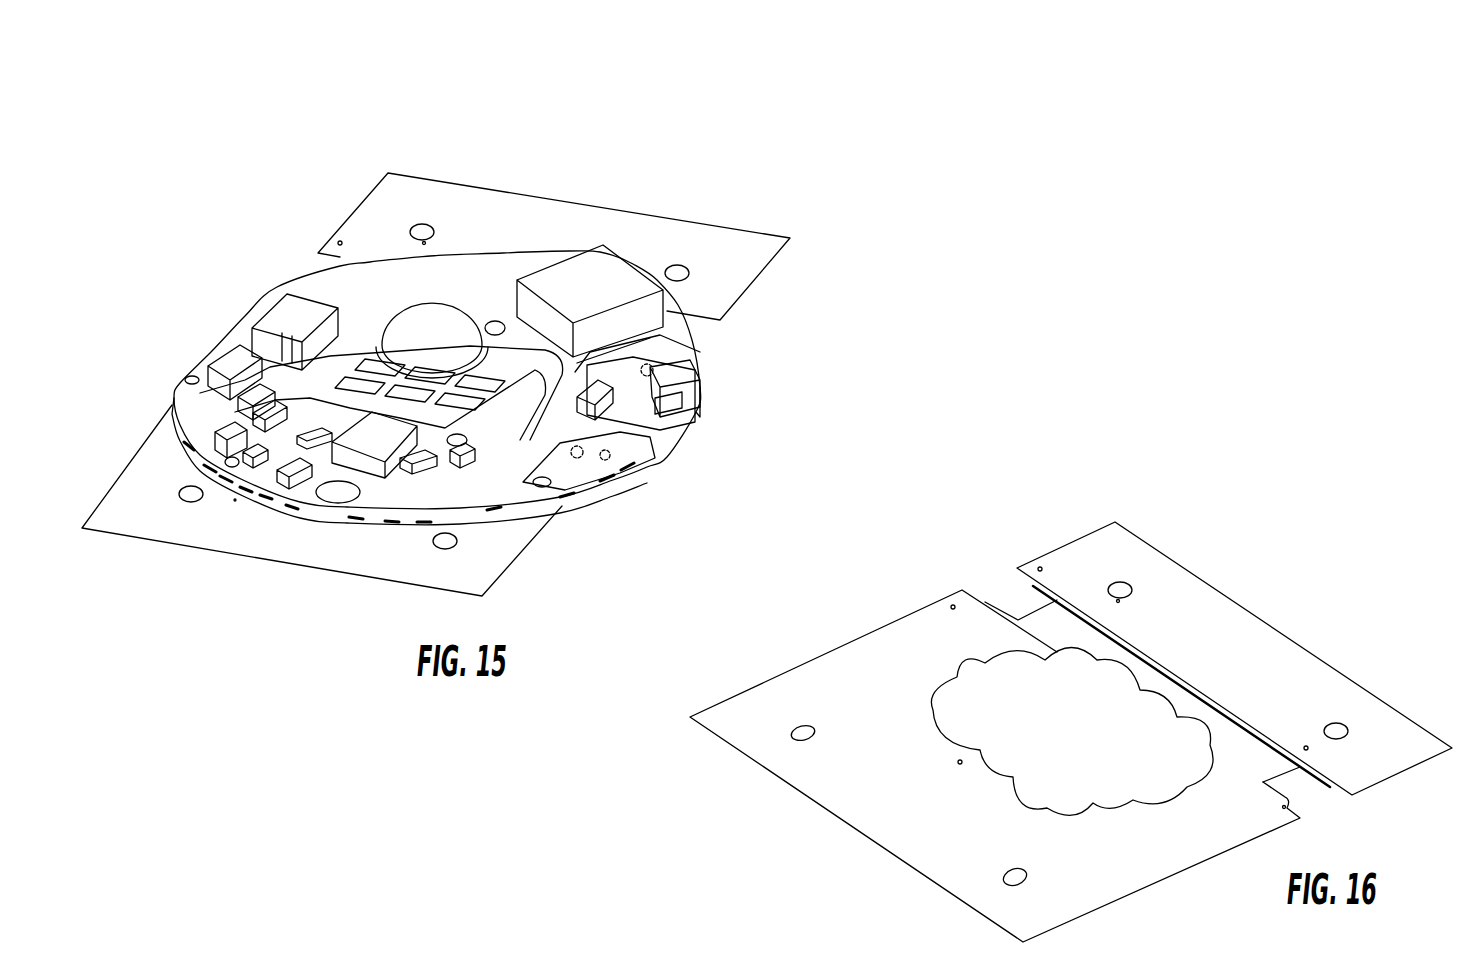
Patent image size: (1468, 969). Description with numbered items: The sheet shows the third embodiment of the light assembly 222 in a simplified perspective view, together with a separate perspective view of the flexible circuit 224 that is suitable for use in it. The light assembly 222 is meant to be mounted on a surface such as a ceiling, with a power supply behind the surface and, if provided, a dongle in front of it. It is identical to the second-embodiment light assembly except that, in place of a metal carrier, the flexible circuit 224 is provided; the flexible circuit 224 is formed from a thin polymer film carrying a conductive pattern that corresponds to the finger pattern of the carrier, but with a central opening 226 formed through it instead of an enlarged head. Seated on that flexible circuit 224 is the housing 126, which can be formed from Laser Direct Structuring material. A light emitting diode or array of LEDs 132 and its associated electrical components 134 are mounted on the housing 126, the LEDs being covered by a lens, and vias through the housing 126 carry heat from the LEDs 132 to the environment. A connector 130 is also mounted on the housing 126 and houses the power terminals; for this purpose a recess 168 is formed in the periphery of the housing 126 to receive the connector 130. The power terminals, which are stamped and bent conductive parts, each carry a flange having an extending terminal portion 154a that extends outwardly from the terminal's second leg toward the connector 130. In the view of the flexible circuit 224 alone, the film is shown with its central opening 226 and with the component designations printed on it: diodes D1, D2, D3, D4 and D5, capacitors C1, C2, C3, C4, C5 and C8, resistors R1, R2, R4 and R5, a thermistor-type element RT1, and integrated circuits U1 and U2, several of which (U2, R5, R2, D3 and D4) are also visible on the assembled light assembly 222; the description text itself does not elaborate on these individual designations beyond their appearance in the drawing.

In FIG. 15, the light assembly 222 is at (733, 140).
In FIG. 15, the flexible circuit 224 is at (577, 217).
In FIG. 16, the flexible circuit 224 is at (1267, 645).
In FIG. 16, the central opening 226 is at (1082, 747).
In FIG. 15, the housing 126 is at (340, 302).
In FIG. 15, the connector 130 is at (700, 420).
In FIG. 15, the light emitting diode 132 is at (441, 306).
In FIG. 15, the electrical components 134 is at (622, 282).
In FIG. 15, the extending terminal portion 154a is at (700, 357).
In FIG. 15, the recess 168 is at (658, 430).
In FIG. 16, the diode D1 is at (1069, 637).
In FIG. 16, the diode D2 is at (953, 607).
In FIG. 15, the diode D3 is at (386, 226).
In FIG. 16, the diode D3 is at (1101, 581).
In FIG. 15, the diode D4 is at (689, 291).
In FIG. 16, the diode D4 is at (1329, 751).
In FIG. 16, the diode D5 is at (1242, 795).
In FIG. 16, the capacitor C1 is at (1093, 803).
In FIG. 16, the capacitor C2 is at (867, 677).
In FIG. 16, the capacitor C3 is at (920, 746).
In FIG. 16, the capacitor C4 is at (896, 694).
In FIG. 16, the capacitor C5 is at (1074, 834).
In FIG. 16, the capacitor C8 is at (870, 749).
In FIG. 16, the resistor R1 is at (996, 821).
In FIG. 15, the resistor R2 is at (436, 541).
In FIG. 16, the resistor R2 is at (1003, 872).
In FIG. 16, the resistor R4 is at (939, 806).
In FIG. 15, the resistor R5 is at (233, 519).
In FIG. 16, the resistor R5 is at (838, 773).
In FIG. 16, the thermistor RT1 is at (1032, 830).
In FIG. 16, the integrated circuit U1 is at (975, 779).
In FIG. 15, the integrated circuit U2 is at (180, 478).
In FIG. 16, the integrated circuit U2 is at (805, 714).